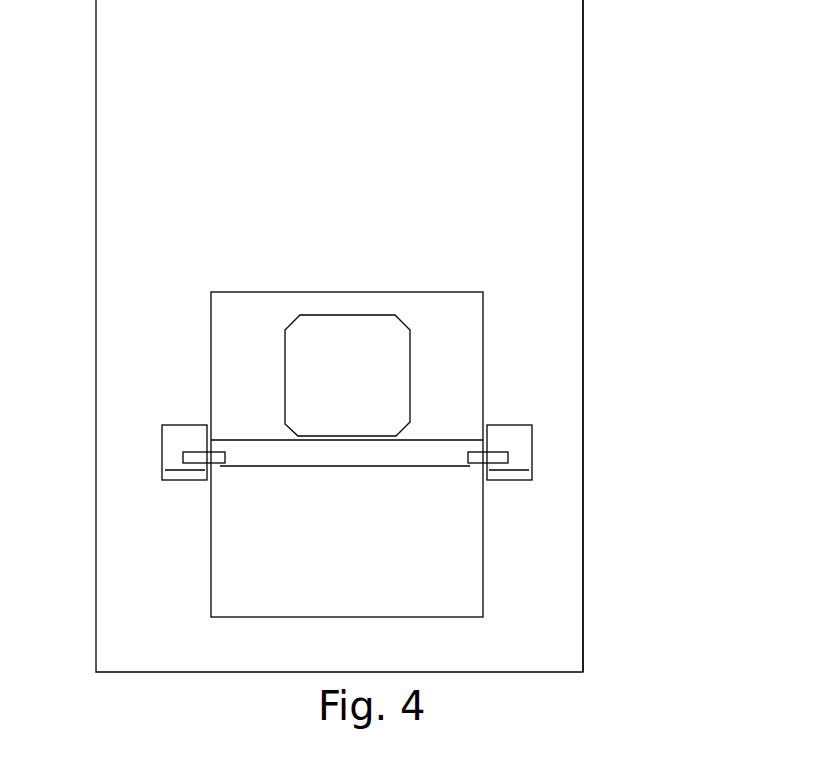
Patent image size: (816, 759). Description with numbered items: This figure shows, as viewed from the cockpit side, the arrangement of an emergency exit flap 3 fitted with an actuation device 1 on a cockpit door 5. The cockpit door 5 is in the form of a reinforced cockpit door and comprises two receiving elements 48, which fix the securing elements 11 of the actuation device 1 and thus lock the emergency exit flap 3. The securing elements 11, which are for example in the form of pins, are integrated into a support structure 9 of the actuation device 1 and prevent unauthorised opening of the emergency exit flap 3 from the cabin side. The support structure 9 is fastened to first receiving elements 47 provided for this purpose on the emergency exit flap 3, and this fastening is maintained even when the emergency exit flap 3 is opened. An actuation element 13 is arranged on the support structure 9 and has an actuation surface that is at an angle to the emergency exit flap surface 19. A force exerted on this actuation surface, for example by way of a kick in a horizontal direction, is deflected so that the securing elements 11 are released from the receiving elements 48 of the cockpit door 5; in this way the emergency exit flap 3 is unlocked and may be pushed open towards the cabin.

The actuation device 1 is at (417, 433).
The emergency exit flap 3 is at (567, 634).
The cockpit door 5 is at (547, 117).
The support structure 9 is at (348, 455).
The securing elements 11 is at (188, 452).
The actuation element 13 is at (390, 338).
The emergency exit flap surface 19 is at (228, 320).
The first receiving elements 47 is at (231, 473).
The receiving elements 48 is at (178, 471).